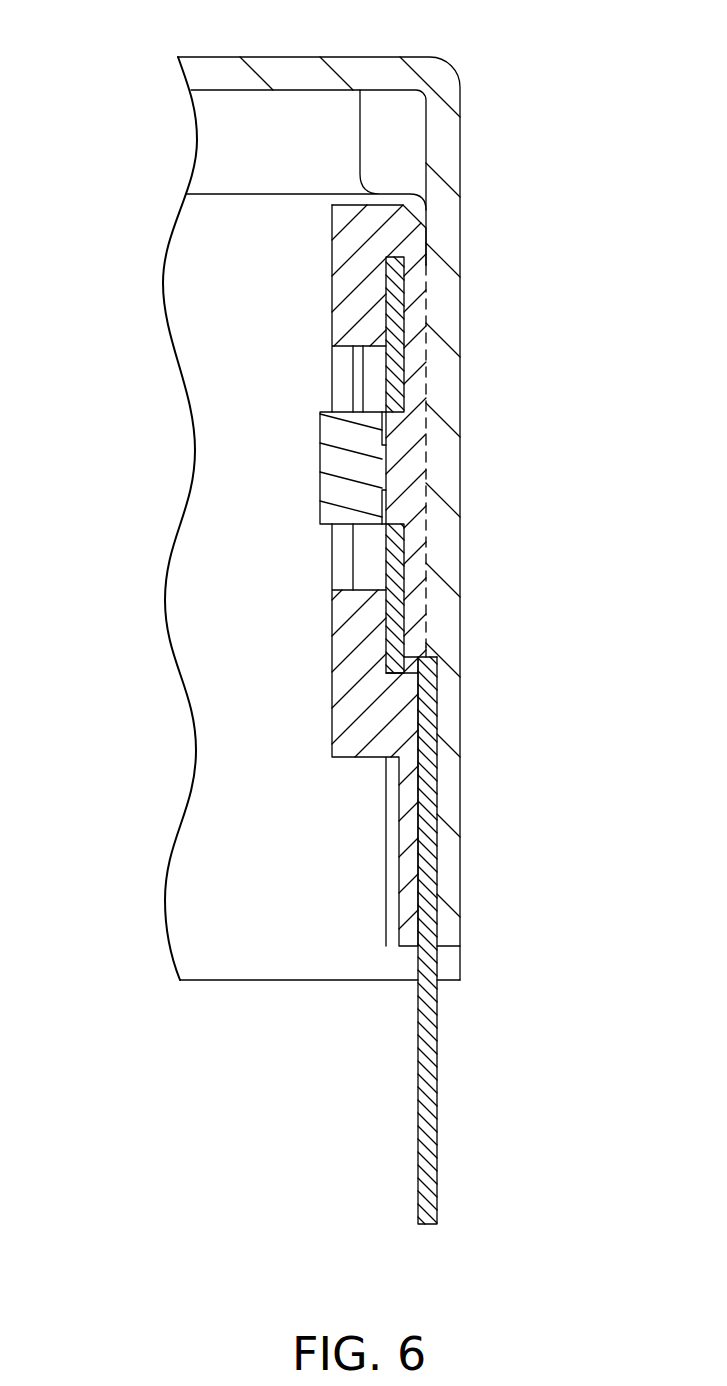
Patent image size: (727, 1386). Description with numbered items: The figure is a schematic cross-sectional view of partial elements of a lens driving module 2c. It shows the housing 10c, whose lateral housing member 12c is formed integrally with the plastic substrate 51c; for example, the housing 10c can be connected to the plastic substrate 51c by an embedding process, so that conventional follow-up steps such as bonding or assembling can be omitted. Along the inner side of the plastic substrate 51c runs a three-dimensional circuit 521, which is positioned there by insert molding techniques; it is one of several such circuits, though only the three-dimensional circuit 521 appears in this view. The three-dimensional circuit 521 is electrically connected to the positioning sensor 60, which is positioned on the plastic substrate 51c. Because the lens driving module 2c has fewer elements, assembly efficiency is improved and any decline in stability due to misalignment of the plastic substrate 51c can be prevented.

The lens driving module 2c is at (111, 56).
The housing 10c is at (463, 150).
The lateral housing member 12c is at (443, 238).
The plastic substrate 51c is at (413, 281).
The 3-D circuit 521 is at (400, 326).
The positioning sensor 60 is at (352, 472).